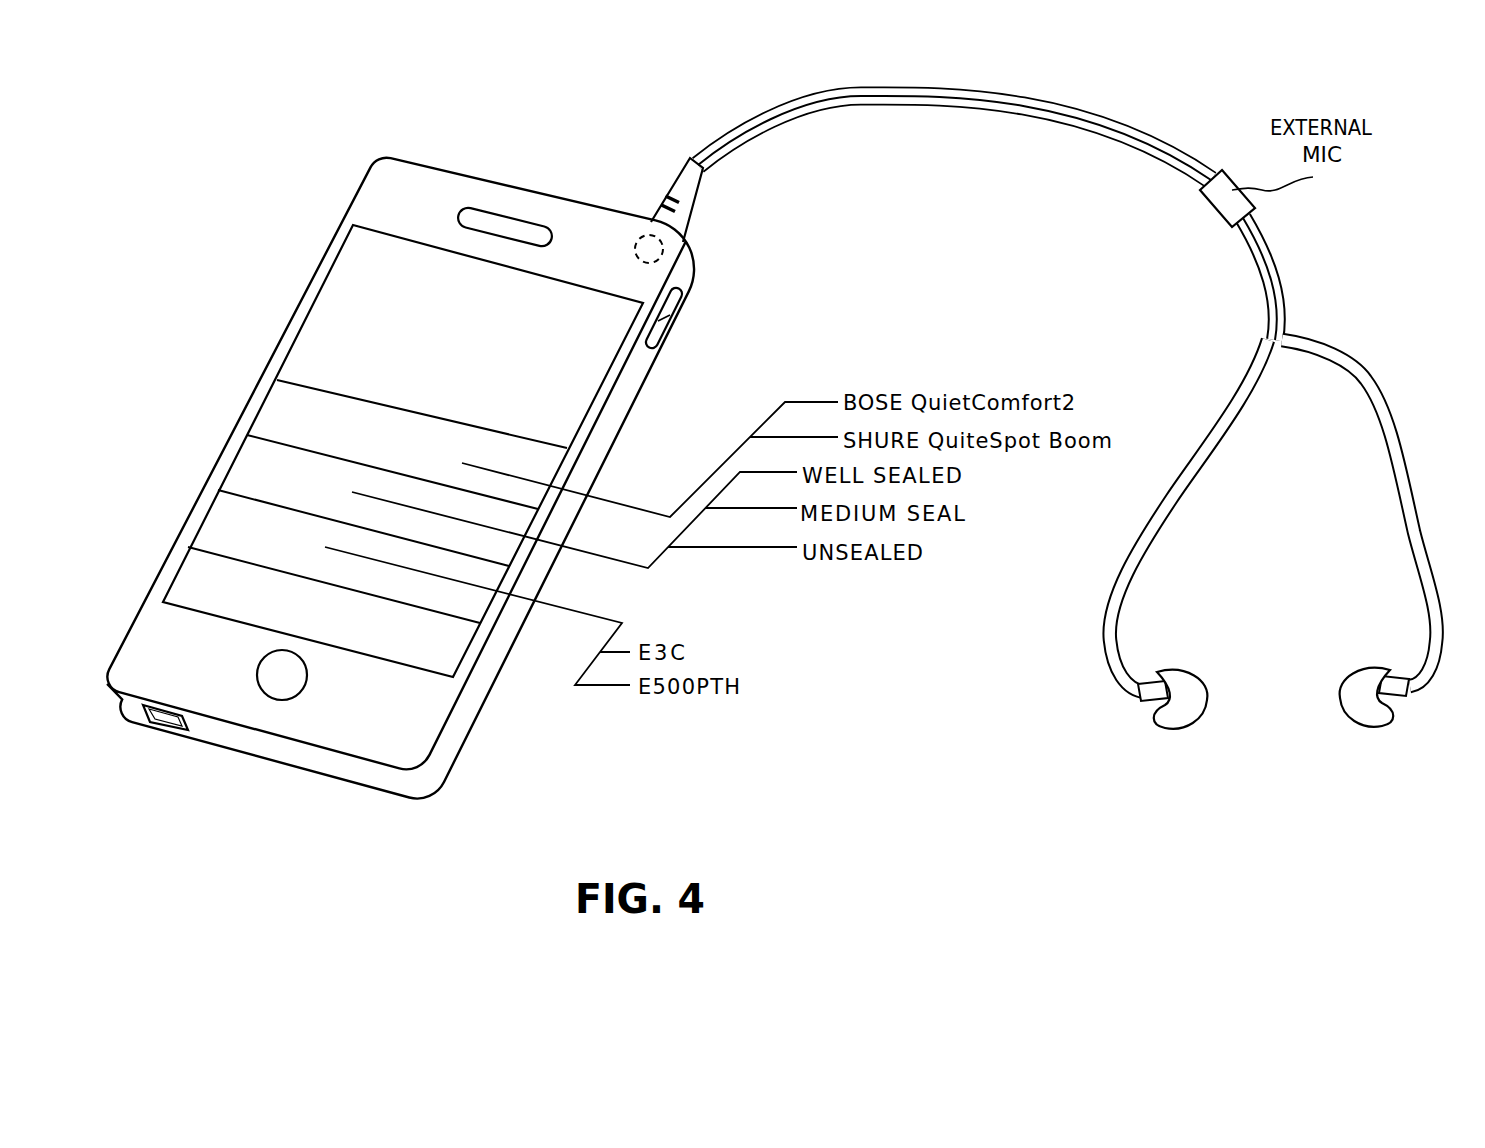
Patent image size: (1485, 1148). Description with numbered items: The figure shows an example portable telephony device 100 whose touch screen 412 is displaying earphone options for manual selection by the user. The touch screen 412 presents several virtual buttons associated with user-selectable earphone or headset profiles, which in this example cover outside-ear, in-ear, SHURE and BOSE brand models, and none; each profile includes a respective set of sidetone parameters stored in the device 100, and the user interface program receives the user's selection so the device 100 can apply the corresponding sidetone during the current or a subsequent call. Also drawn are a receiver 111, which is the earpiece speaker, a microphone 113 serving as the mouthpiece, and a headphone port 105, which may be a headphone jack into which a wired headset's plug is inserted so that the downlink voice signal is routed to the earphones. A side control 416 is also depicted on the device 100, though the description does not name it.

The portable telephony device 100 is at (692, 253).
The headphone port 105 is at (640, 236).
The receiver 111 is at (505, 228).
The microphone 113 is at (162, 722).
The touch screen 412 is at (338, 296).
The side button 416 is at (682, 307).